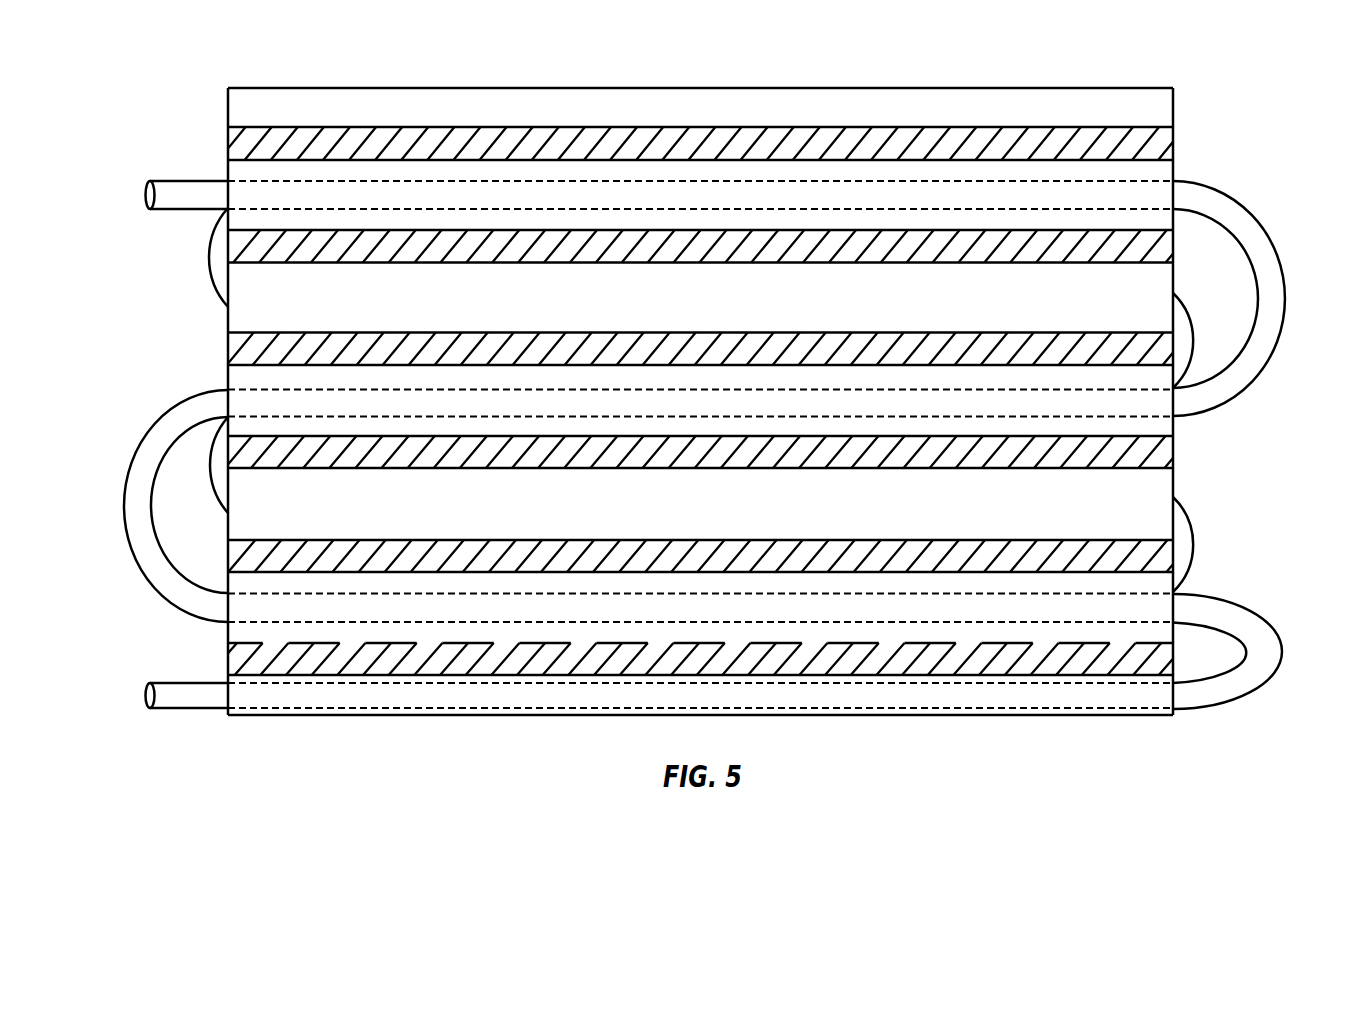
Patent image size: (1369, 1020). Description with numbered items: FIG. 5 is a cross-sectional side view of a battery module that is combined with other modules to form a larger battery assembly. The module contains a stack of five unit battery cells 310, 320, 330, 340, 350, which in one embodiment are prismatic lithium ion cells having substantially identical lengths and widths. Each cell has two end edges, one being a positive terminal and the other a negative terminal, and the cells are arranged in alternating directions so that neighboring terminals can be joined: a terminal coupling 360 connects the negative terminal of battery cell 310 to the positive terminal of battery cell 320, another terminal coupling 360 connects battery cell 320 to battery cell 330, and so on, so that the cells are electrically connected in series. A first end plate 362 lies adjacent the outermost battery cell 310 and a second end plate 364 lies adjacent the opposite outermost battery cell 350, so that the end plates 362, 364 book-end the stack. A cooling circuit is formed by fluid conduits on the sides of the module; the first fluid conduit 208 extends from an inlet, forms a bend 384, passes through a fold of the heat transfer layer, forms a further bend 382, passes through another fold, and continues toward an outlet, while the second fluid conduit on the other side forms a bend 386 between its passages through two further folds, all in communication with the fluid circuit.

The first fluid conduit 208 is at (181, 715).
The unit battery cell 310 is at (1160, 629).
The unit battery cell 320 is at (248, 517).
The unit battery cell 330 is at (1158, 425).
The unit battery cell 340 is at (1158, 287).
The unit battery cell 350 is at (1157, 176).
The terminal coupling 360 is at (208, 256).
The first end plate 362 is at (297, 717).
The second end plate 364 is at (281, 102).
The bend 382 is at (1283, 652).
The bend 384 is at (124, 503).
The bend 386 is at (1284, 309).